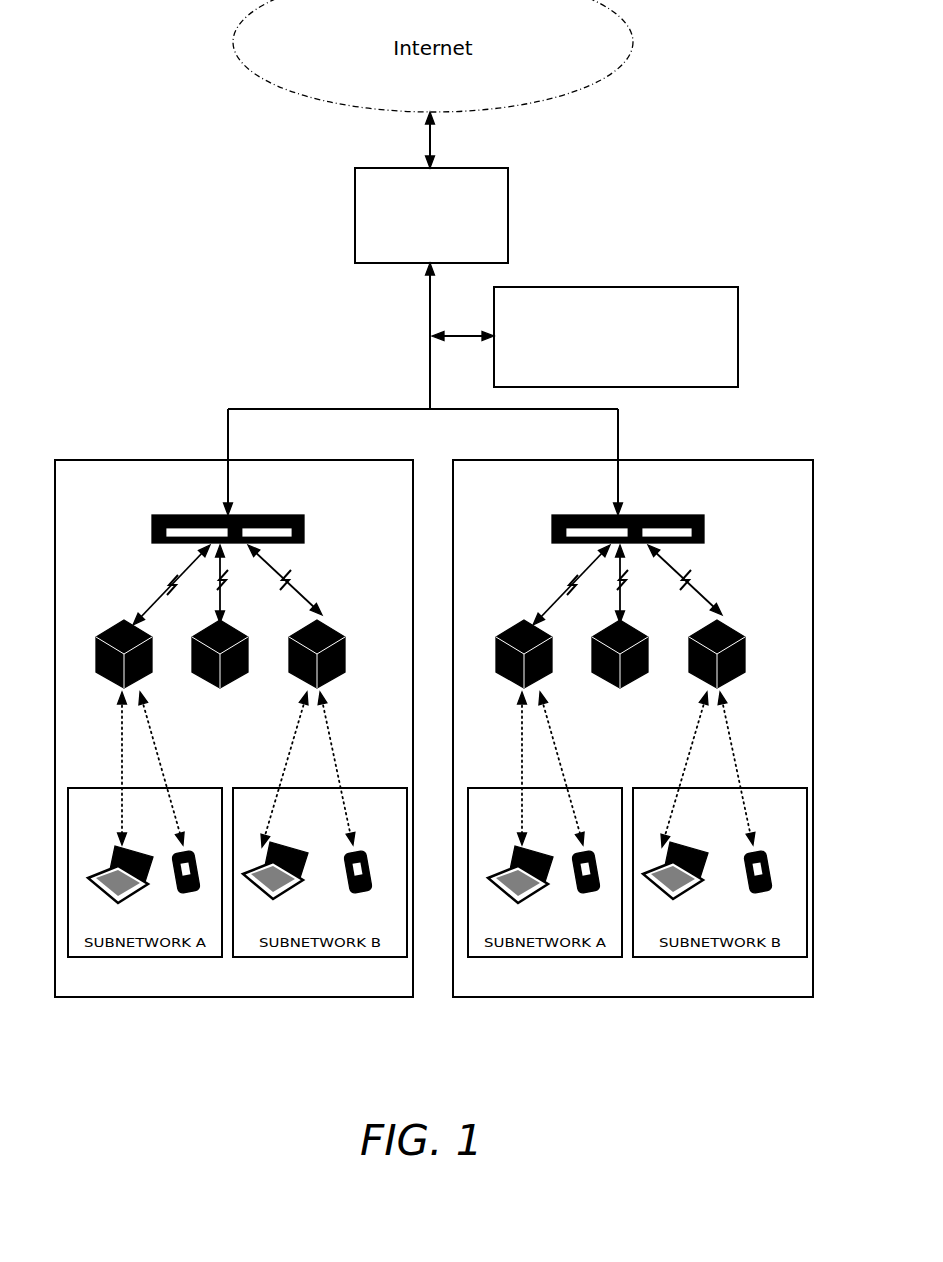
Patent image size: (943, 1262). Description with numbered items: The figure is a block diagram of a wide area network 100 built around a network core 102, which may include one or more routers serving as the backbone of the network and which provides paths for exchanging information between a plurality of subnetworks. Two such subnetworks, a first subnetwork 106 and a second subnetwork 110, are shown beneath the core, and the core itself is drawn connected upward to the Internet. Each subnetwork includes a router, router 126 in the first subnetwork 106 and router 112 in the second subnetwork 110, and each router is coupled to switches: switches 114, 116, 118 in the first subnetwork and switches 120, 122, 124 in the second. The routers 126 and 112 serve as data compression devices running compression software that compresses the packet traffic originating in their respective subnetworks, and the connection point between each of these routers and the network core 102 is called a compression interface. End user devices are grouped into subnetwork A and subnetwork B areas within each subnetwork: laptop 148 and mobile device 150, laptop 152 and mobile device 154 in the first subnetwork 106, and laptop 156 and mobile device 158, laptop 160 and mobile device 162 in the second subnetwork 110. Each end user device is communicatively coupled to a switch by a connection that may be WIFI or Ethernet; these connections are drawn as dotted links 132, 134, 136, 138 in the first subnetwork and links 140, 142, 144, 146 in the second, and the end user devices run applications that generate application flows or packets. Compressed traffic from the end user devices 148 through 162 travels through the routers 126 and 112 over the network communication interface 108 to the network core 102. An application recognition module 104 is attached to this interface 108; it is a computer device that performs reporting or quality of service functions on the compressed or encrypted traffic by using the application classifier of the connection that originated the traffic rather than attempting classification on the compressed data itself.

The network 100 is at (648, 198).
The network core 102 is at (431, 215).
The application recognition module 104 is at (585, 337).
The subnetwork 106 is at (387, 460).
The network communication interface 108 is at (423, 389).
The subnetwork 110 is at (773, 460).
The router 112 is at (642, 510).
The switch 114 is at (140, 621).
The switch 116 is at (233, 628).
The switch 118 is at (333, 630).
The switch 120 is at (548, 650).
The switch 122 is at (643, 642).
The switch 124 is at (747, 646).
The router 126 is at (298, 515).
The wireless link 132 is at (122, 768).
The wireless link 134 is at (161, 768).
The wireless link 136 is at (284, 769).
The wireless link 138 is at (336, 768).
The wireless link 140 is at (522, 768).
The wireless link 142 is at (561, 768).
The wireless link 144 is at (684, 769).
The wireless link 146 is at (736, 768).
The end user device 148 is at (118, 905).
The end user device 150 is at (181, 902).
The end user device 152 is at (286, 898).
The end user device 154 is at (360, 897).
The end user device 156 is at (514, 882).
The end user device 158 is at (567, 884).
The end user device 160 is at (675, 880).
The end user device 162 is at (745, 884).